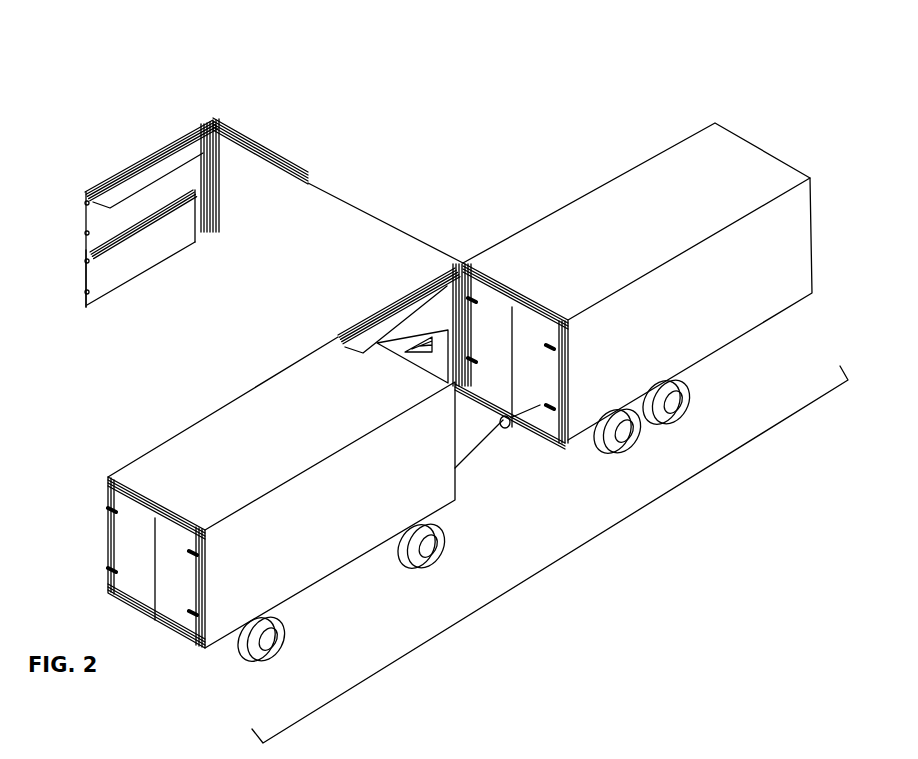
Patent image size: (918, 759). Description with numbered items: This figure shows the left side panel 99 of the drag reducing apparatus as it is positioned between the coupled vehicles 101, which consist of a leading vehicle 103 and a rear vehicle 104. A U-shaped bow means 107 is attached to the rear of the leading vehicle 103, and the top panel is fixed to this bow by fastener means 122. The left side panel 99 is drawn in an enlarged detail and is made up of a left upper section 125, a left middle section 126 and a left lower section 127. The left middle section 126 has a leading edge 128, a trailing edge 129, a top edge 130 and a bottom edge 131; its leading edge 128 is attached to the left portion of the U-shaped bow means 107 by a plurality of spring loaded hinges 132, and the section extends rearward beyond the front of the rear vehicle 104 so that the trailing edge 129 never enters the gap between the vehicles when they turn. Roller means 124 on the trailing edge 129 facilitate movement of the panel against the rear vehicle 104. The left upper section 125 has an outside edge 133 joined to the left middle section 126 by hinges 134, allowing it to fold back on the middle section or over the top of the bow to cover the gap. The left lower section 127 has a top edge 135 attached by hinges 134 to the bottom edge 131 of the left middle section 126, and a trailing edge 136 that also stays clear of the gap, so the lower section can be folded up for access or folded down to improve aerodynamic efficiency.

The left side panel 99 is at (152, 150).
The coupled vehicles 101 is at (557, 560).
The leading vehicle 103 is at (637, 293).
The rear vehicle 104 is at (281, 504).
The U-shaped bow means 107 is at (483, 265).
The fastener means 122 is at (462, 257).
The roller means 124 is at (85, 202).
The left upper section 125 is at (190, 150).
The left middle section 126 is at (85, 225).
The left lower section 127 is at (152, 255).
The leading edge 128 is at (202, 227).
The trailing edge 129 is at (87, 243).
The top edge 130 is at (92, 182).
The bottom edge 131 is at (88, 249).
The spring loaded hinges 132 is at (215, 239).
The outside edge 133 is at (132, 172).
The hinges 134 is at (110, 179).
The top edge 135 is at (155, 217).
The trailing edge 136 is at (88, 282).